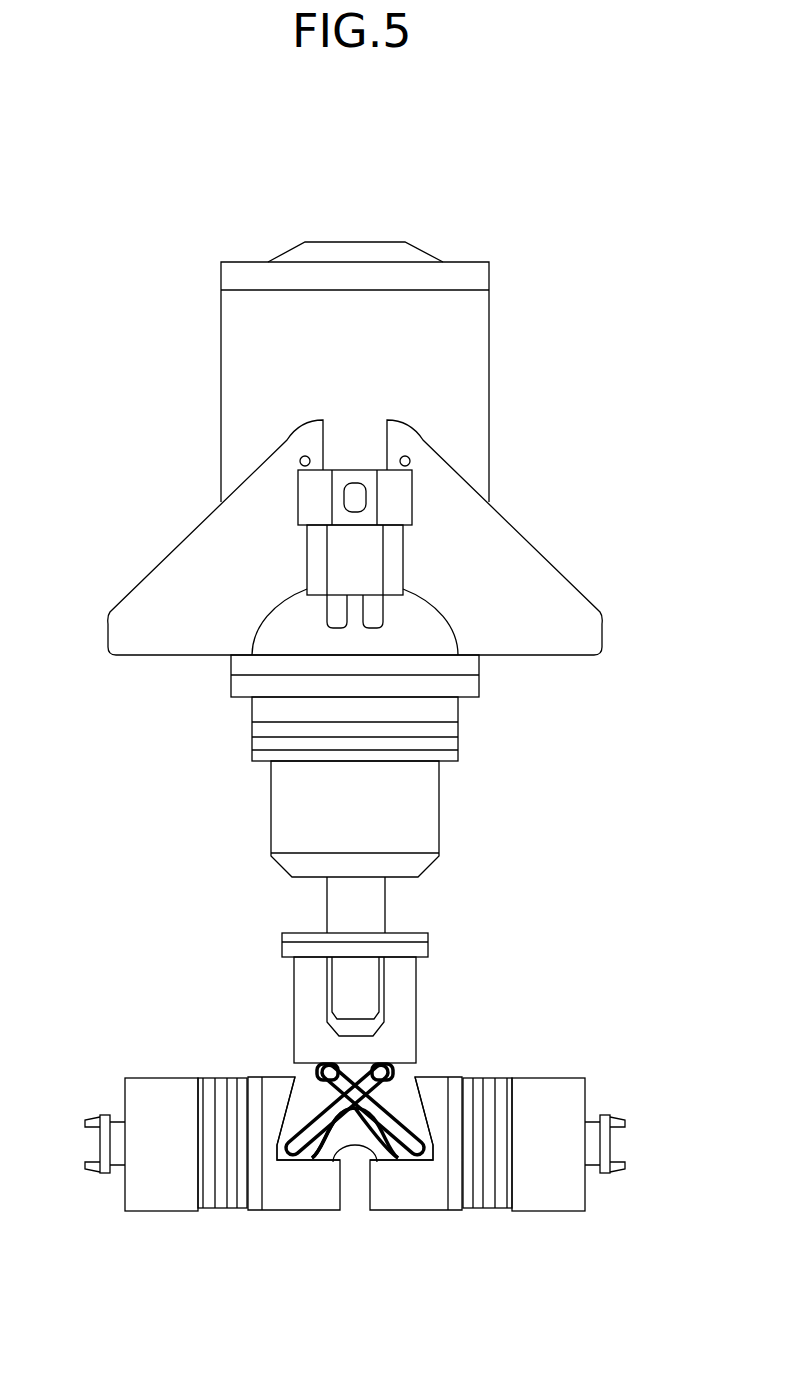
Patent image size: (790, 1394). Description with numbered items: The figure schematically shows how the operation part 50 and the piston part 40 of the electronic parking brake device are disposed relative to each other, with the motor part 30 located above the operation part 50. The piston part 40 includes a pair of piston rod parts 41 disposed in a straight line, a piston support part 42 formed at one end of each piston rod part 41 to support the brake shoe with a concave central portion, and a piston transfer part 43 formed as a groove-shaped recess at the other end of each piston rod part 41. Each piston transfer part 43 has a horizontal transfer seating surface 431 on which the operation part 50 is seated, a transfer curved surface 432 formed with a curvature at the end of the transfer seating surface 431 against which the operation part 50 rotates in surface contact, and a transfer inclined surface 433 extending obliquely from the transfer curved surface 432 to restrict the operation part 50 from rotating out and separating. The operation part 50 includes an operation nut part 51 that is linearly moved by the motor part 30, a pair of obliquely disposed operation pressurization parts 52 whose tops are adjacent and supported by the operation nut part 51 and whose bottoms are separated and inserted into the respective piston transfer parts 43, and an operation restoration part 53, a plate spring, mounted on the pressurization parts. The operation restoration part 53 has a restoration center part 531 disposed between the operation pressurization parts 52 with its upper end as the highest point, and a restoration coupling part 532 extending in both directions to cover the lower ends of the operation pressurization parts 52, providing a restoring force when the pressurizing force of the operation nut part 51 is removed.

The motor part 30 is at (492, 395).
The piston part 40 is at (355, 1227).
The piston rod part 41 is at (430, 1211).
The piston support part 42 is at (607, 1172).
The piston transfer part 43 is at (338, 1197).
The transfer seating surface 431 is at (401, 1168).
The transfer curved surface 432 is at (290, 1147).
The transfer inclined surface 433 is at (345, 1150).
The operation part 50 is at (470, 1048).
The operation nut part 51 is at (417, 987).
The operation pressurization part 52 is at (337, 1076).
The operation restoration part 53 is at (455, 1075).
The restoration center part 531 is at (377, 1128).
The restoration coupling part 532 is at (405, 1118).